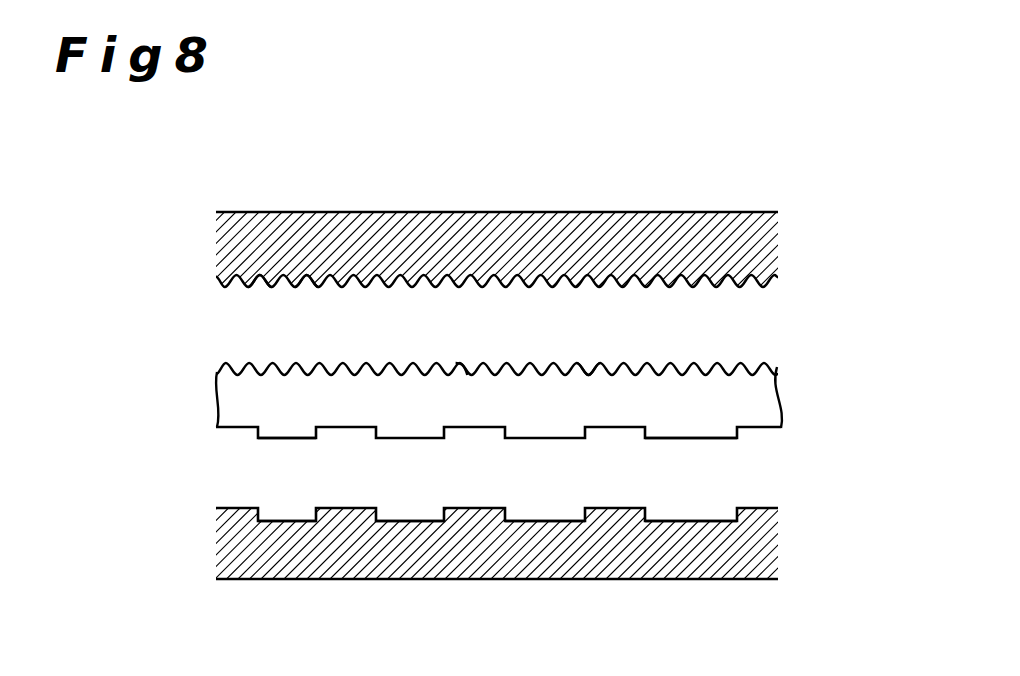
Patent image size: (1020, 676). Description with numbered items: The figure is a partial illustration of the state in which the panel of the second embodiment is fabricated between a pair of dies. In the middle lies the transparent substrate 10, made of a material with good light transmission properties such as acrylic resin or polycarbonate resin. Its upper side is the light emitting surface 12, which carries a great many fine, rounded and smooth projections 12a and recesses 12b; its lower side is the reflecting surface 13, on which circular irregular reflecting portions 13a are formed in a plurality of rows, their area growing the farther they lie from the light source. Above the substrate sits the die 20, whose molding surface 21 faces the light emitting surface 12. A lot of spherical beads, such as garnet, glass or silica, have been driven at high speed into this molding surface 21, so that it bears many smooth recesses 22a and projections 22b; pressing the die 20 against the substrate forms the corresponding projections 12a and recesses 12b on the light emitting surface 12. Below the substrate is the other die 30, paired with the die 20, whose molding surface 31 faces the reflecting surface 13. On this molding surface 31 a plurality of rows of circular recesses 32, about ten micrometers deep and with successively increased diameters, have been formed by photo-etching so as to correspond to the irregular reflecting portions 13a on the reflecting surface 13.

The transparent substrate 10 is at (233, 411).
The light emitting surface 12 is at (778, 373).
The projections 12a is at (607, 366).
The recesses 12b is at (507, 366).
The reflecting surface 13 is at (233, 428).
The irregular reflecting portions 13a is at (290, 440).
The die 20 is at (781, 238).
The molding surface 21 is at (779, 284).
The recesses 22a is at (327, 283).
The projections 22b is at (272, 286).
The other die 30 is at (781, 548).
The molding surface 31 is at (762, 512).
The recesses 32 is at (287, 521).